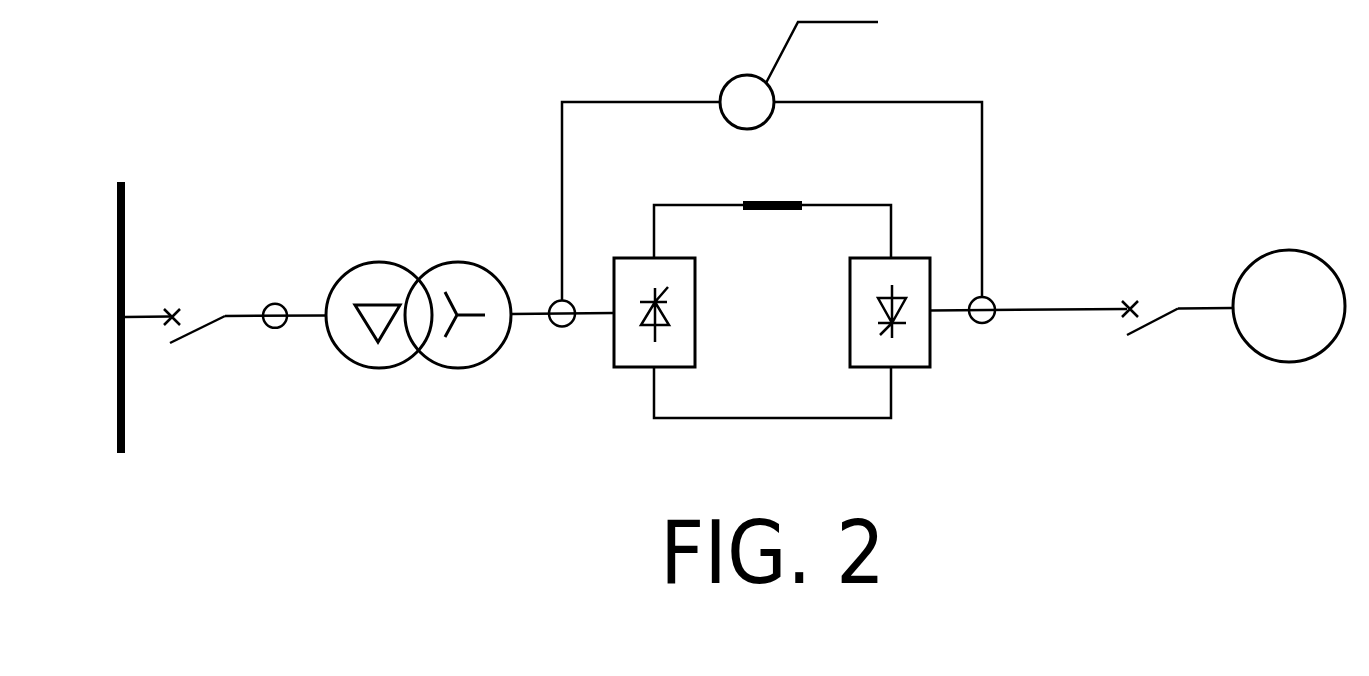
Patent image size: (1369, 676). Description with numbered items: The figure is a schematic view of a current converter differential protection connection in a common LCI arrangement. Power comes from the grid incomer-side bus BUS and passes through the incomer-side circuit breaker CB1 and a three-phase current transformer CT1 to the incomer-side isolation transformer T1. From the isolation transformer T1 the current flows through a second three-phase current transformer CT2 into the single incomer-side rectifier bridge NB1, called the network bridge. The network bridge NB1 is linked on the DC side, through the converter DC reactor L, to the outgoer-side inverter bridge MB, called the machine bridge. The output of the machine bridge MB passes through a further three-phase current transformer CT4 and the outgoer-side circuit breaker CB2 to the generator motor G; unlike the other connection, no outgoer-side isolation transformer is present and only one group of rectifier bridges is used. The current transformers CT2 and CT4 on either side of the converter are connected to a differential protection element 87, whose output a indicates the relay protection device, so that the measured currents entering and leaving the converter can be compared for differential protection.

The grid incomer-side bus BUS is at (130, 285).
The incomer-side circuit breaker CB1 is at (194, 349).
The three-phase current transformer CT1 is at (274, 346).
The incomer-side isolation transformer T1 is at (418, 342).
The three-phase current transformer CT2 is at (562, 339).
The differential relay 87 is at (772, 187).
The relay protection device a is at (822, 41).
The incomer-side rectifier bridge NB1 is at (671, 333).
The converter DC reactor L is at (772, 212).
The outgoer-side inverter bridge MB is at (881, 333).
The three-phase current transformer CT4 is at (980, 336).
The outgoer-side circuit breaker CB2 is at (1154, 340).
The generator motor G is at (1289, 306).